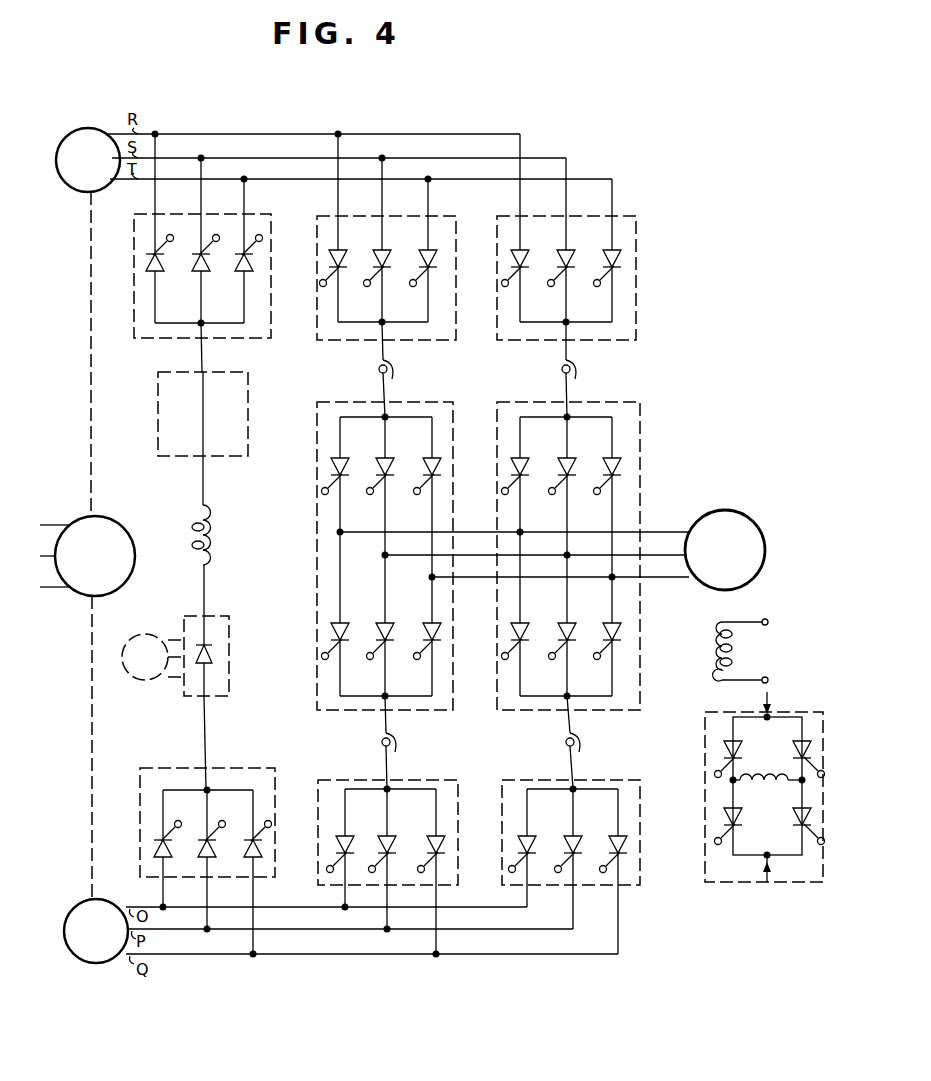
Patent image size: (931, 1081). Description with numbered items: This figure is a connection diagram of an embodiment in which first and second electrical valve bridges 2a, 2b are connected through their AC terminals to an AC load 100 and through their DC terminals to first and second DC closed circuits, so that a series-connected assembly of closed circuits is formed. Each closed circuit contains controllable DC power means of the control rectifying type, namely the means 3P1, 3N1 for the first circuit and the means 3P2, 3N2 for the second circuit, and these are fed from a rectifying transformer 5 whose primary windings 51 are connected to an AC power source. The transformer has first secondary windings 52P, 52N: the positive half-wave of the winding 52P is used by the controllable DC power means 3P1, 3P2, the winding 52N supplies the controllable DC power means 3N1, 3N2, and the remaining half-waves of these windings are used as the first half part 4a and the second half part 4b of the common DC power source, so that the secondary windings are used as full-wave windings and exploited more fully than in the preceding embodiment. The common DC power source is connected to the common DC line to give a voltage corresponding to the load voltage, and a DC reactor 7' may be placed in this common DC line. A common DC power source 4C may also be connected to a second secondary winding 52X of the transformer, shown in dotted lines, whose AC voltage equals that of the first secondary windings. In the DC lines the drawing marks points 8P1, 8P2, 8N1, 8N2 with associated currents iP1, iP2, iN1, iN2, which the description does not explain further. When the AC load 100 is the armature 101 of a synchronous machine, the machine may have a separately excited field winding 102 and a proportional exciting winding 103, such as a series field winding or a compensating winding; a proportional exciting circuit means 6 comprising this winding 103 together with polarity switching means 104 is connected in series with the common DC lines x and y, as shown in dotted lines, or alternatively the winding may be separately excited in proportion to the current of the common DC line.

The first secondary winding 52P is at (95, 128).
The first half part of the common DC power source 4a is at (134, 260).
The proportional exciting circuit means 6 is at (158, 398).
The polarity switching means 104 is at (796, 752).
The proportional exciting winding 103 is at (766, 782).
The DC reactor 7' is at (220, 535).
The common DC power source 4C is at (229, 648).
The second secondary winding 52X is at (130, 679).
The rectifying transformer 5 is at (62, 487).
The primary windings 51 is at (75, 591).
The second half part of the common DC power source 4b is at (170, 768).
The first secondary winding 52N is at (90, 962).
The controllable DC power means 3P1 is at (456, 217).
The current detector switch P1 8P1 is at (405, 369).
The detected current P1 iP1 is at (378, 369).
The controllable DC power means 3P2 is at (690, 214).
The current detector switch P2 8P2 is at (589, 369).
The detected current P2 iP2 is at (561, 369).
The first electrical valve bridge 2a is at (317, 553).
The second electrical valve bridge 2b is at (640, 490).
The current detector switch N1 8N1 is at (407, 742).
The detected current N1 iN1 is at (381, 742).
The current detector switch N2 8N2 is at (594, 742).
The detected current N2 iN2 is at (565, 742).
The controllable DC power means 3N1 is at (450, 775).
The controllable DC power means 3N2 is at (662, 775).
The AC load 100 is at (815, 562).
The armature 101 is at (731, 510).
The separately excited field winding 102 is at (736, 649).